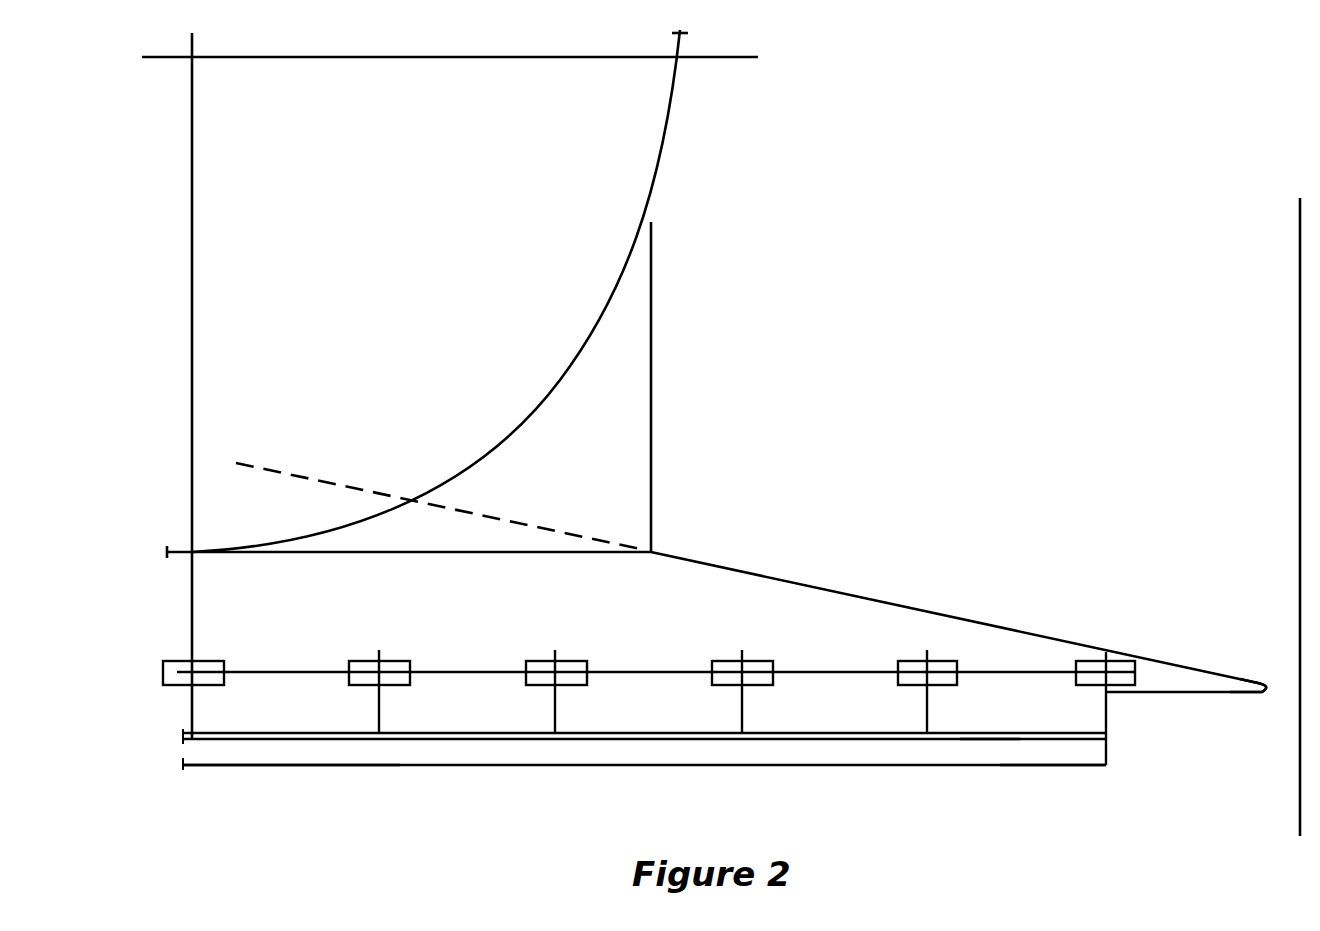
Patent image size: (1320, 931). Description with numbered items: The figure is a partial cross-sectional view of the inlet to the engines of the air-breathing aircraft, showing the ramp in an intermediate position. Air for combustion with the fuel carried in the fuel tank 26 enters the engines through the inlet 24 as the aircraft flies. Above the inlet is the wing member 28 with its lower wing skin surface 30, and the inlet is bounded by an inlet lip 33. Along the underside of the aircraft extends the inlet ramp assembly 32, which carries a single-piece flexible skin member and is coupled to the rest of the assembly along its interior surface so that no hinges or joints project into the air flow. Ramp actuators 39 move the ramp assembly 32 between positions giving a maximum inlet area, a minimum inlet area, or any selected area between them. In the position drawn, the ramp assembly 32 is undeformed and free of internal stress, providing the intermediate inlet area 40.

The inlet 24 is at (316, 748).
The fuel tank 26 is at (633, 140).
The wing member 28 is at (683, 588).
The lower wing skin surface 30 is at (1228, 692).
The inlet ramp assembly 32 is at (665, 738).
The inlet lip 33 is at (843, 767).
The ramp actuators 39 is at (393, 660).
The intermediate inlet area 40 is at (993, 741).